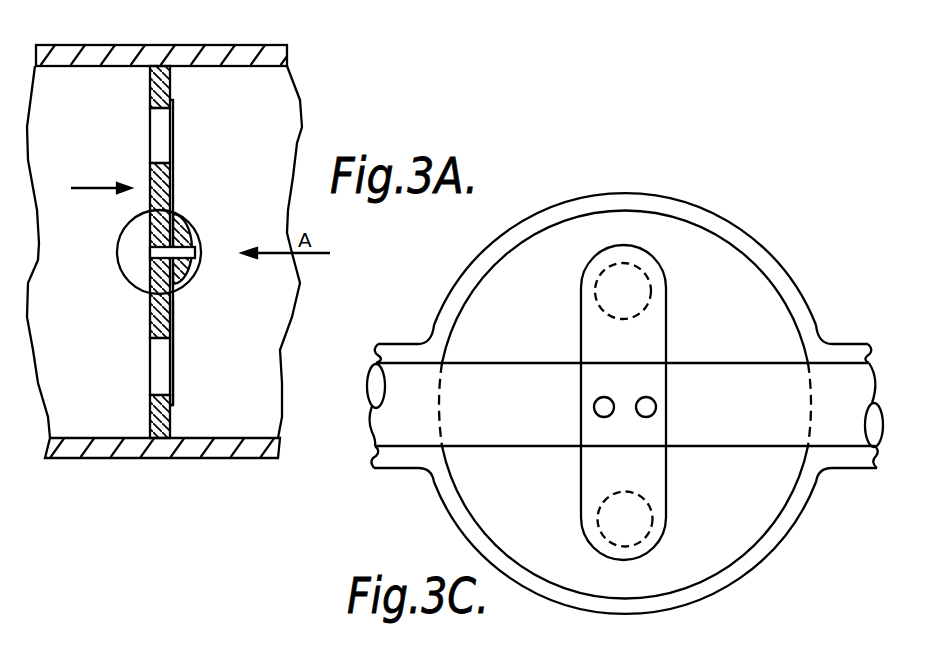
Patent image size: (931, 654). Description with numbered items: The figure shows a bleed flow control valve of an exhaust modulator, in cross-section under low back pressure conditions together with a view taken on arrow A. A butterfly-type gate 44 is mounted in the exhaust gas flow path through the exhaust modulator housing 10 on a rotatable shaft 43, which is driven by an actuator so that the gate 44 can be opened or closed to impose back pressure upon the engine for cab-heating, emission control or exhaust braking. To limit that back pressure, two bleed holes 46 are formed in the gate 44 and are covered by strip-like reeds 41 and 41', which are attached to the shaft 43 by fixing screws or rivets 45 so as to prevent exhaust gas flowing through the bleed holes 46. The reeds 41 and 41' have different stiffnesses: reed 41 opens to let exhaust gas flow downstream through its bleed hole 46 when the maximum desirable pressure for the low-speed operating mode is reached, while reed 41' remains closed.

In FIG. 3A, the exhaust modulator housing 10 is at (138, 58).
In FIG. 3A, the reed 41 is at (204, 248).
In FIG. 3C, the reed 41 is at (655, 402).
In FIG. 3A, the reed 41' is at (208, 352).
In FIG. 3C, the reed 41' is at (594, 519).
In FIG. 3A, the rotatable shaft 43 is at (140, 273).
In FIG. 3C, the rotatable shaft 43 is at (488, 430).
In FIG. 3A, the butterfly-type gate 44 is at (175, 428).
In FIG. 3C, the butterfly-type gate 44 is at (757, 499).
In FIG. 3A, the fixing screws or rivets 45 is at (203, 253).
In FIG. 3A, the bleed holes 46 is at (149, 123).